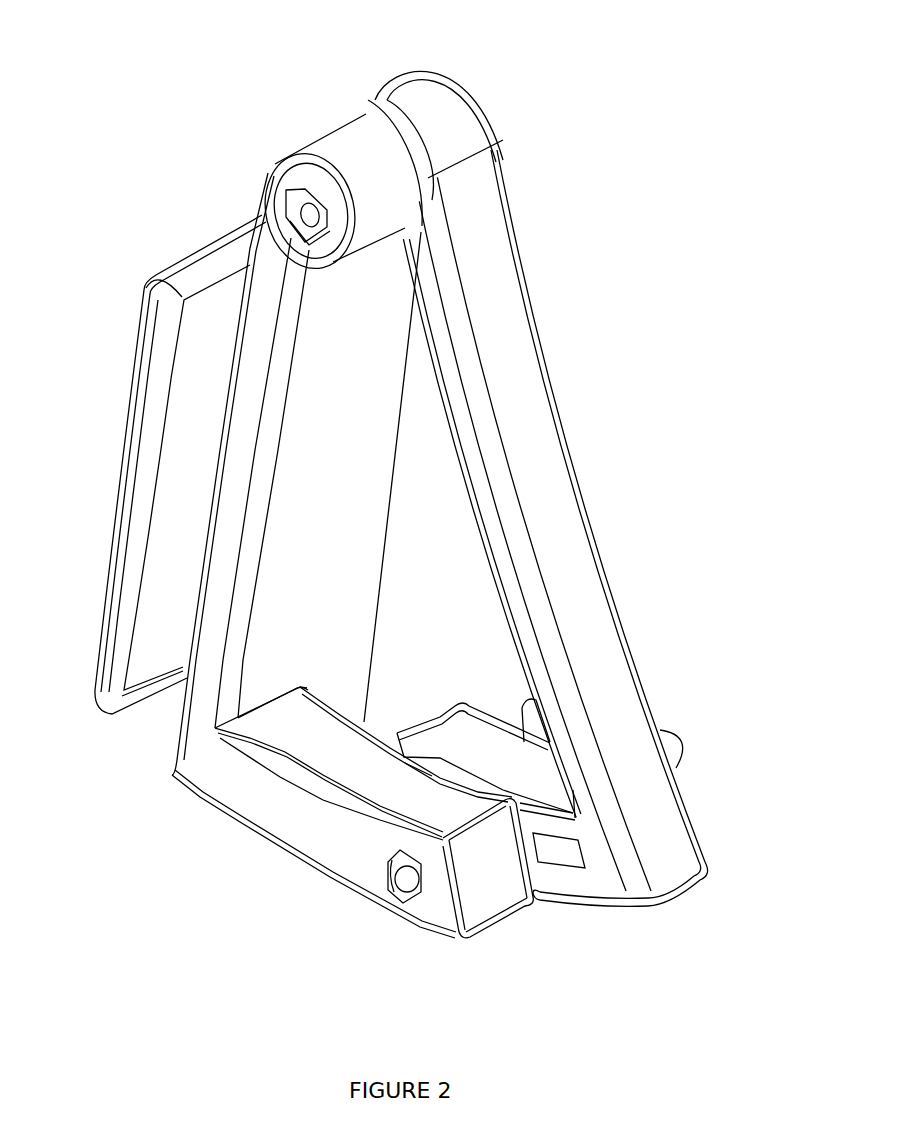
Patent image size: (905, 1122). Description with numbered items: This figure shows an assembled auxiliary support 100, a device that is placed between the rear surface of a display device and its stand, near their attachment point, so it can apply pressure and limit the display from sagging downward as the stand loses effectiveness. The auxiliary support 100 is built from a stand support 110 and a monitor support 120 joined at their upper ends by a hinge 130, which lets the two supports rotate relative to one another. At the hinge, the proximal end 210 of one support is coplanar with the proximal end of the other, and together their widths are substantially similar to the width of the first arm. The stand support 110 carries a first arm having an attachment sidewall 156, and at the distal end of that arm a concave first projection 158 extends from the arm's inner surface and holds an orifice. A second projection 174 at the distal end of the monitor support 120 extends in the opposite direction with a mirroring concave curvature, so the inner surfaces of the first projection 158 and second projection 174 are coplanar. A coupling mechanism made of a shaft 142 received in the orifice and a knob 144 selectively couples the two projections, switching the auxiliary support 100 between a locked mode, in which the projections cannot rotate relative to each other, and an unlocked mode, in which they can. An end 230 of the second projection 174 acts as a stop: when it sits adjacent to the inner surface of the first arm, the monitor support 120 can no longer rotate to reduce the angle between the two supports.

The auxiliary support 100 is at (122, 92).
The stand support 110 is at (290, 515).
The monitor support 120 is at (610, 567).
The hinge 130 is at (286, 192).
The shaft 142 is at (386, 868).
The knob 144 is at (690, 746).
The attachment sidewall 156 is at (187, 250).
The first projection 158 is at (317, 787).
The second projection 174 is at (592, 882).
The proximal end 210 is at (344, 154).
The end 230 is at (423, 717).